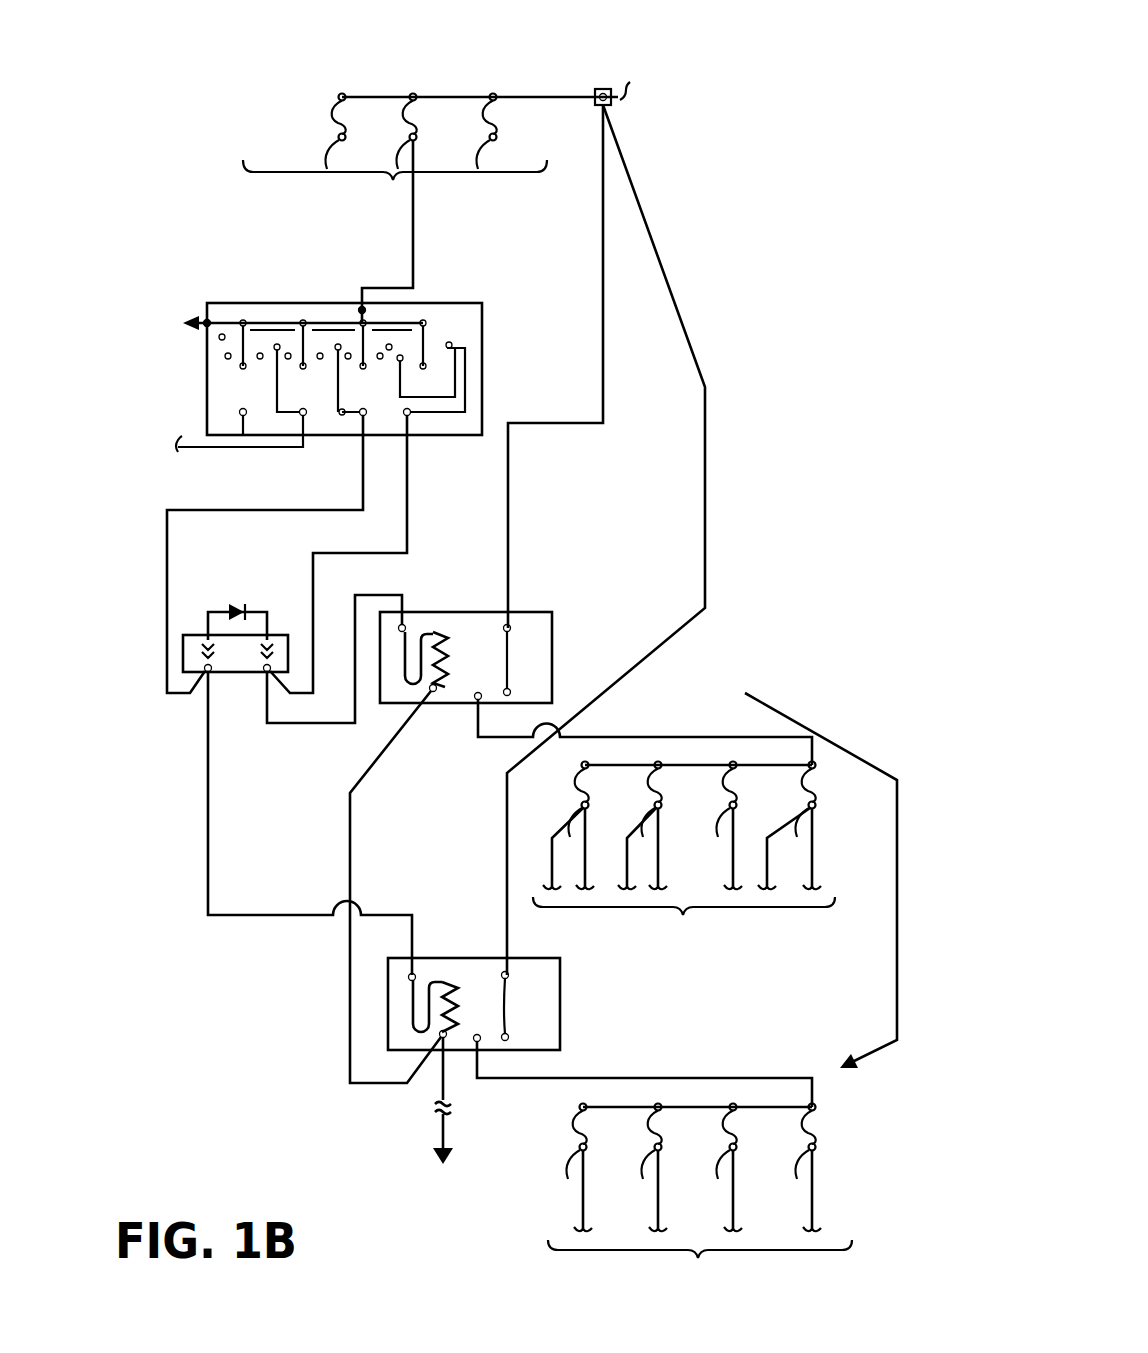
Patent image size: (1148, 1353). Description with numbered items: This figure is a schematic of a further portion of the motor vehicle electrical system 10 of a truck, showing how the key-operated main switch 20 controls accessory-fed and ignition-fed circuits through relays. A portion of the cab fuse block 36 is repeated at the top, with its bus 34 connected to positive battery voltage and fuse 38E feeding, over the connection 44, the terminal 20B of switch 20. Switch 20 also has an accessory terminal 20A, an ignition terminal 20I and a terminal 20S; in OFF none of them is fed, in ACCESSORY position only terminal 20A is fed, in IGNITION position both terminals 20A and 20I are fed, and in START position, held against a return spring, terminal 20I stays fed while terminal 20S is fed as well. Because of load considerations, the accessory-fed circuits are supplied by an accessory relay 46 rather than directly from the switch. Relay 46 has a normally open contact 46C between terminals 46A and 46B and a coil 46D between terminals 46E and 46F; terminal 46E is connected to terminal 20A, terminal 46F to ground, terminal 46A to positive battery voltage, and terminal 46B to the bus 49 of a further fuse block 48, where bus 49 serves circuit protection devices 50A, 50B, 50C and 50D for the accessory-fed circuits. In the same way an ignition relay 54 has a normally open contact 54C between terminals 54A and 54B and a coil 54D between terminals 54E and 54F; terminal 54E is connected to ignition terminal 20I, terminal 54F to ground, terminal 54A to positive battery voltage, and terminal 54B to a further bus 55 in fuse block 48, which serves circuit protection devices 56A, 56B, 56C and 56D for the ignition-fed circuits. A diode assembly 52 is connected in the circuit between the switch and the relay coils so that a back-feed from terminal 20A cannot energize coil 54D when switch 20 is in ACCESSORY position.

The motor vehicle electrical system 10 is at (716, 240).
The main switch 20 is at (207, 395).
The accessory terminal 20A is at (408, 415).
The terminal 20B is at (364, 311).
The ignition terminal 20I is at (365, 415).
The terminal 20S is at (305, 415).
The bus 34 is at (354, 142).
The fuse block 36 is at (416, 76).
The fuse 38E is at (415, 134).
The wire to key switch 44 is at (425, 248).
The accessory relay 46 is at (528, 592).
The terminal 46A is at (507, 625).
The terminal 46B is at (477, 699).
The normally open contact 46C is at (508, 662).
The coil 46D is at (396, 672).
The terminal 46E is at (404, 625).
The terminal 46F is at (434, 692).
The fuse block 48 is at (732, 728).
The bus 49 is at (772, 765).
The circuit protection device 50A is at (577, 799).
The circuit protection device 50B is at (628, 826).
The circuit protection device 50C is at (702, 826).
The circuit protection device 50D is at (784, 826).
The diode assembly 52 is at (265, 610).
The ignition relay 54 is at (578, 987).
The terminal 54A is at (504, 972).
The terminal 54B is at (476, 1042).
The normally open contact 54C is at (507, 1003).
The coil 54D is at (408, 1000).
The terminal 54E is at (414, 974).
The terminal 54F is at (441, 1038).
The bus 55 is at (698, 1106).
The circuit protection device 56A is at (577, 1123).
The circuit protection device 56B is at (627, 1168).
The circuit protection device 56C is at (702, 1168).
The circuit protection device 56D is at (780, 1168).